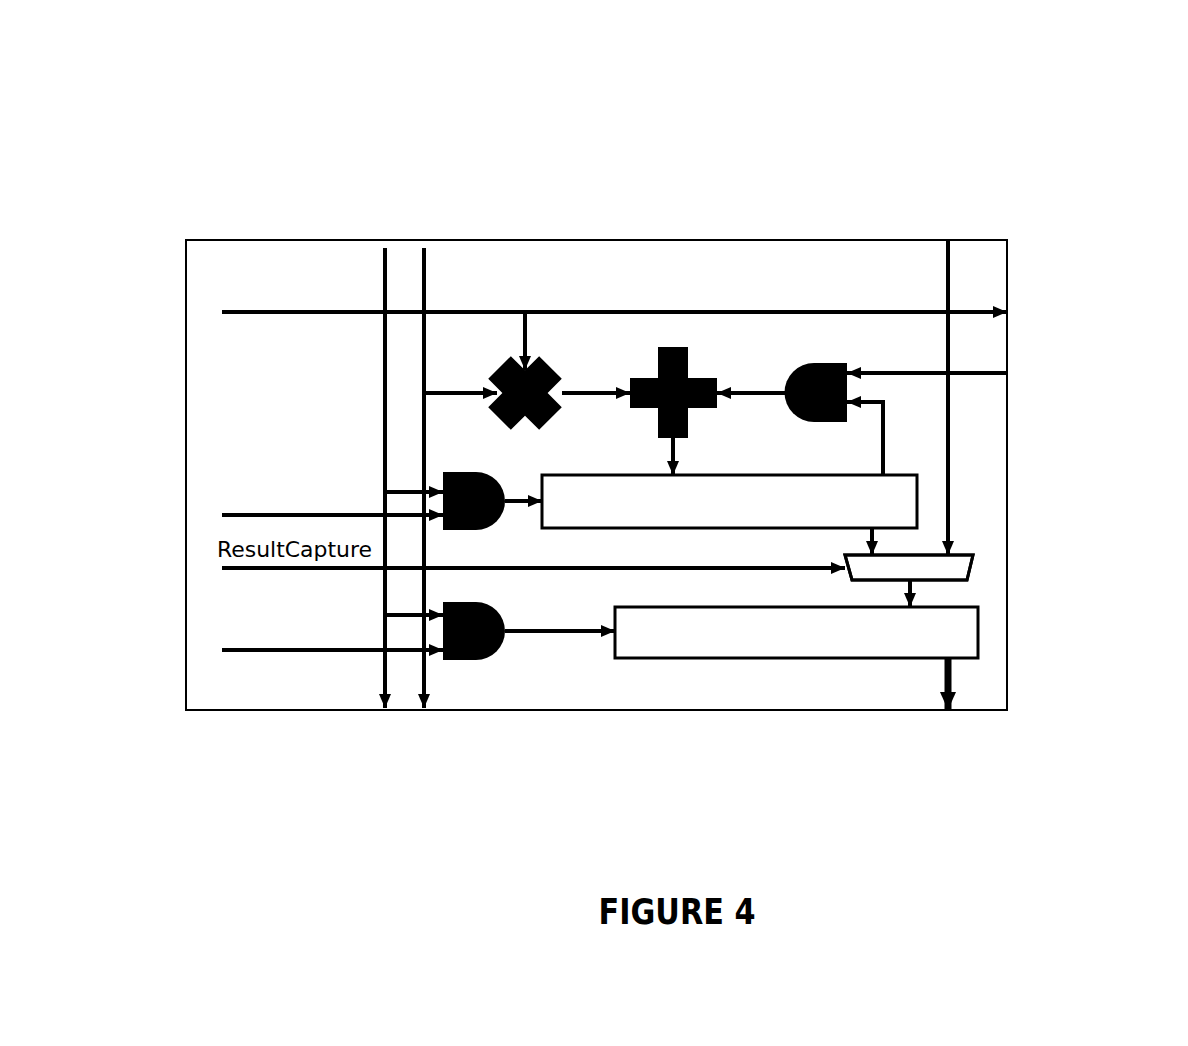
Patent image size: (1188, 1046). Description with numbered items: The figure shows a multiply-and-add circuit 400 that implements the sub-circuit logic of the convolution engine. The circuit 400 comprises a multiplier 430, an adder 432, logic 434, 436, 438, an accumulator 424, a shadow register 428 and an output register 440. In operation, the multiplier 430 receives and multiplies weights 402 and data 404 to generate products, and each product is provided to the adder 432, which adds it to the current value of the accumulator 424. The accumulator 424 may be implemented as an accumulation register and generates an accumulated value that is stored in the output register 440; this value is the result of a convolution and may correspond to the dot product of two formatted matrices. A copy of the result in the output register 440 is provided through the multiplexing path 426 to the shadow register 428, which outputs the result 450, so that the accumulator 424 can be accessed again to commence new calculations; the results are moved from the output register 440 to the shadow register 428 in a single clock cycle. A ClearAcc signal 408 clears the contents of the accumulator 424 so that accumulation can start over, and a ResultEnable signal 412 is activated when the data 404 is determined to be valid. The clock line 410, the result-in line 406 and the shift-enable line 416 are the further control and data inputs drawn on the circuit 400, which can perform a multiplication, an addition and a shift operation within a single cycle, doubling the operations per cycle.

The multiply-and-add circuit 400 is at (657, 26).
The weights 402 is at (330, 307).
The data 404 is at (426, 298).
The result in line 406 is at (945, 292).
The ClearAcc signal 408 is at (987, 372).
The clock line 410 is at (385, 422).
The ResultEnable signal 412 is at (355, 505).
The shift enable line 416 is at (350, 640).
The accumulator 424 is at (725, 475).
The multiplexer 426 is at (843, 554).
The shadow register 428 is at (655, 660).
The multiplier 430 is at (557, 360).
The adder 432 is at (700, 373).
The logic 434 is at (825, 358).
The logic 436 is at (500, 477).
The logic 438 is at (510, 615).
The output register 440 is at (970, 553).
The result 450 is at (1007, 728).